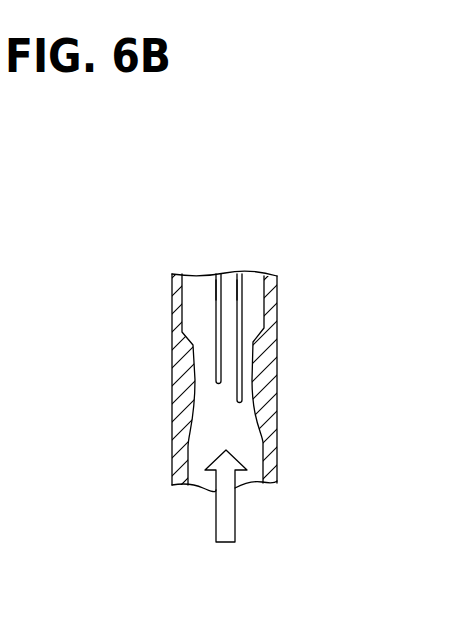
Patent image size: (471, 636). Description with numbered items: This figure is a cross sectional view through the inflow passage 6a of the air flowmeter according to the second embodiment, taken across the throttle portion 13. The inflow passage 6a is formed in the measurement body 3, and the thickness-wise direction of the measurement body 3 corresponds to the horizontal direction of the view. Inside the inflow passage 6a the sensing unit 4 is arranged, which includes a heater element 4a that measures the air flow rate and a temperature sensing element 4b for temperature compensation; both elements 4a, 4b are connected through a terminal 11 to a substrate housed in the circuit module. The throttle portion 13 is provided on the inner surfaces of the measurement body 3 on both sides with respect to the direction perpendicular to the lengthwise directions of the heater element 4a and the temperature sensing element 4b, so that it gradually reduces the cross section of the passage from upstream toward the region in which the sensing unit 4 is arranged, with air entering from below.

The measurement body 3 is at (275, 287).
The sensing unit 4 is at (145, 346).
The heater element 4a is at (215, 378).
The temperature sensing element 4b is at (235, 401).
The inflow passage 6a is at (247, 450).
The terminal 11 is at (240, 326).
The throttle portion 13 is at (199, 400).